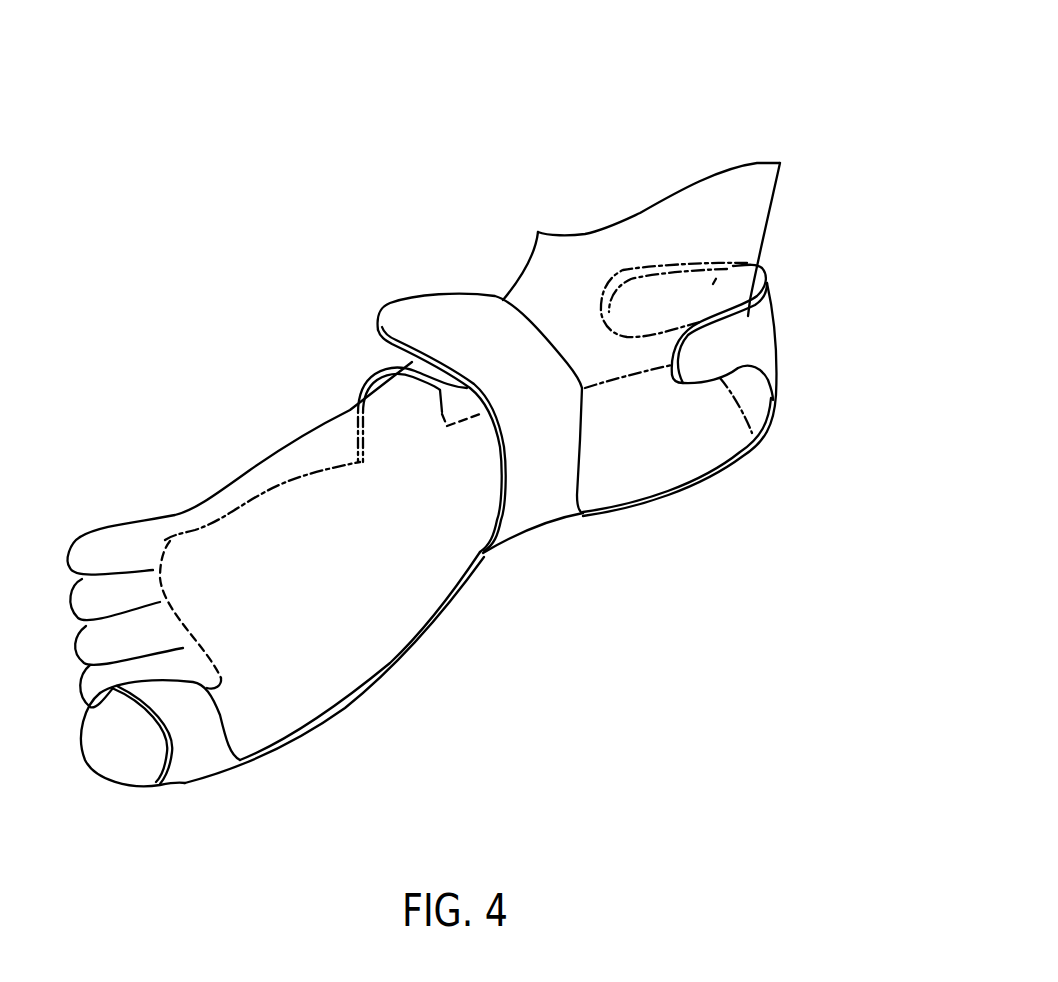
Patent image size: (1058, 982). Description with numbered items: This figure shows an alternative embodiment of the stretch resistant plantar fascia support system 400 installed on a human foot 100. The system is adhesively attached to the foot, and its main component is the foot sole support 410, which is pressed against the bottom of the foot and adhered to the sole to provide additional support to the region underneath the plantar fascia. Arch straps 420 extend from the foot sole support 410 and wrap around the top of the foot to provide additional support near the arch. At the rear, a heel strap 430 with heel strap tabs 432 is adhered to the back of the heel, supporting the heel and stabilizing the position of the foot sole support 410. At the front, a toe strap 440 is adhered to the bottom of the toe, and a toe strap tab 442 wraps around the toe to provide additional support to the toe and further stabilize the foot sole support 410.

The human foot 100 is at (211, 500).
The stretch resistant plantar fascia support system 400 is at (678, 84).
The foot sole support 410 is at (446, 563).
The arch straps 420 is at (450, 306).
The heel strap 430 is at (775, 367).
The heel strap tabs 432 is at (763, 259).
The toe strap 440 is at (274, 752).
The toe strap tab 442 is at (208, 764).